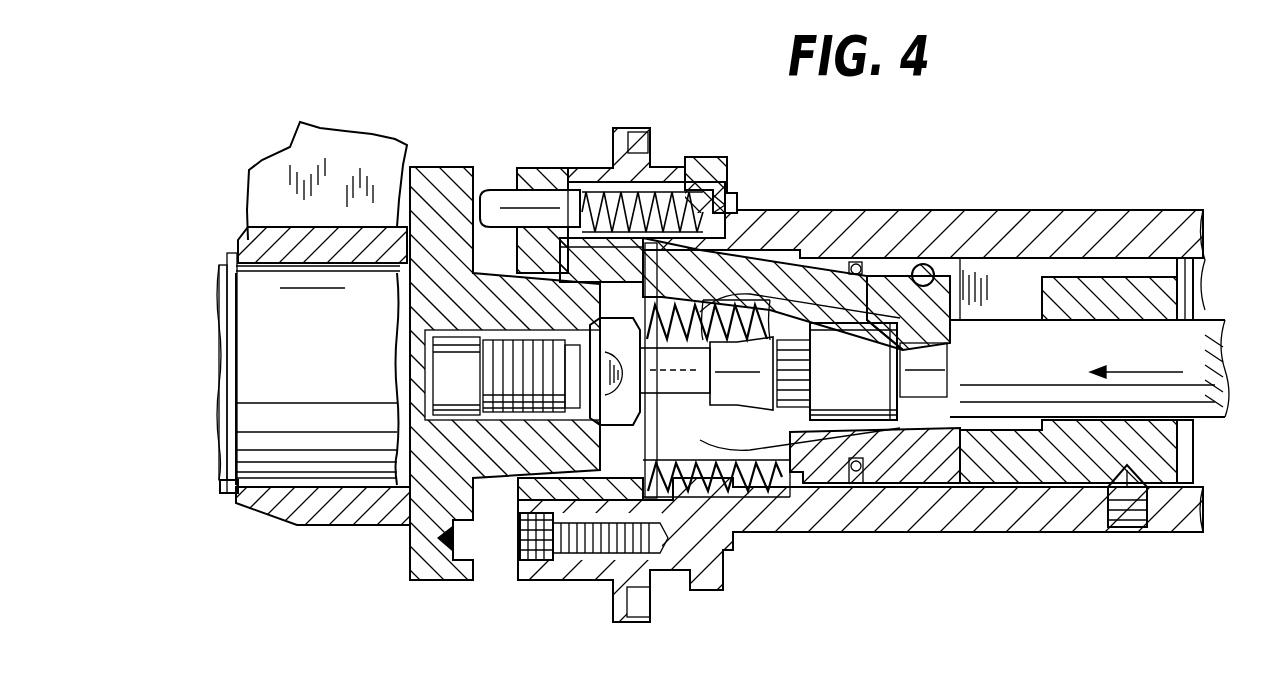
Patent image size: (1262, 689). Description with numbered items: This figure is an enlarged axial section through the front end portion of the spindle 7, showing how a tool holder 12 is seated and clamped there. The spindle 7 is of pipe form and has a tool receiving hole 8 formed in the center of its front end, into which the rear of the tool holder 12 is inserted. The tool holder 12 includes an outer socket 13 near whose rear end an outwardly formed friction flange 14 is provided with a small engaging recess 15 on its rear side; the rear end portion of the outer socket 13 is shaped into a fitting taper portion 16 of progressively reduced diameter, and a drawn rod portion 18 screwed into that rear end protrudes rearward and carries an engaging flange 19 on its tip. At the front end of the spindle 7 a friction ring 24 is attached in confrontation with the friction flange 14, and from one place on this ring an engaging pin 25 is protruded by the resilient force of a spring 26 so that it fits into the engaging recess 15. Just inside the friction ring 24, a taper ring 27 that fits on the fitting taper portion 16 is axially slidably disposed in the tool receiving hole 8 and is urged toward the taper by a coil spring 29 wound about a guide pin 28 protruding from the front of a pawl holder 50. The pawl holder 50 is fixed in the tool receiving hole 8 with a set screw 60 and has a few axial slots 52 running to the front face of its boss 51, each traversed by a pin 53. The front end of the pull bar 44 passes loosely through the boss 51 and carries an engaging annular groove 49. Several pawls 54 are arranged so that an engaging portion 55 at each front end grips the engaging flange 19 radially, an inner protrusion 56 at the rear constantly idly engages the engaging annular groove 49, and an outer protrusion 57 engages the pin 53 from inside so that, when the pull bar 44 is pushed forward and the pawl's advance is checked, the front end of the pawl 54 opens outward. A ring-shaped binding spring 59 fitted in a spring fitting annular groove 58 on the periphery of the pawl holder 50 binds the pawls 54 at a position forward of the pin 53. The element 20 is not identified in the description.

The spindle 7 is at (835, 232).
The tool receiving hole 8 is at (763, 408).
The tool holder 12 is at (226, 494).
The outer socket 13 is at (292, 476).
The friction flange 14 is at (445, 572).
The engaging recess 15 is at (450, 545).
The fitting taper portion 16 is at (595, 514).
The drawn rod portion 18 is at (640, 360).
The engaging flange 19 is at (740, 386).
The flange 20 is at (232, 405).
The friction ring 24 is at (537, 170).
The engaging pin 25 is at (552, 198).
The spring 26 is at (697, 193).
The taper ring 27 is at (632, 253).
The guide pin 28 is at (785, 363).
The coil spring 29 is at (693, 498).
The pull bar 44 is at (1207, 337).
The engaging annular groove 49 is at (947, 410).
The pawl holder 50 is at (1007, 474).
The boss 51 is at (1157, 287).
The axial slot 52 is at (1023, 288).
The pin 53 is at (925, 263).
The pawl 54 is at (763, 270).
The engaging portion 55 is at (810, 326).
The inner protrusion 56 is at (973, 297).
The outer protrusion 57 is at (933, 318).
The spring fitting annular groove 58 is at (857, 478).
The binding spring 59 is at (856, 262).
The set screw 60 is at (1128, 504).